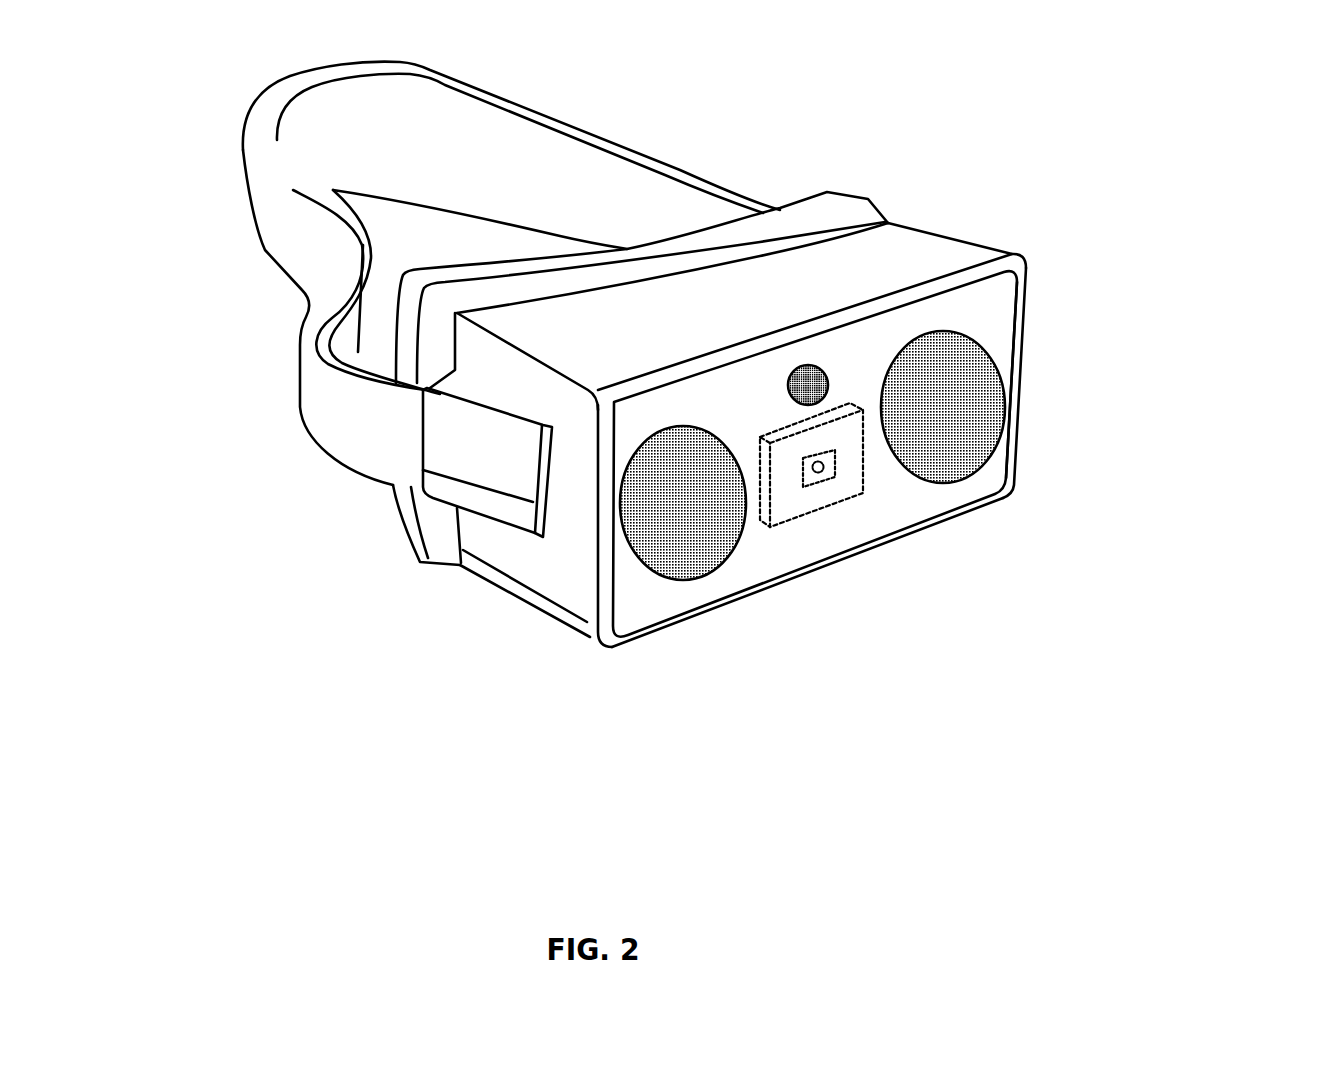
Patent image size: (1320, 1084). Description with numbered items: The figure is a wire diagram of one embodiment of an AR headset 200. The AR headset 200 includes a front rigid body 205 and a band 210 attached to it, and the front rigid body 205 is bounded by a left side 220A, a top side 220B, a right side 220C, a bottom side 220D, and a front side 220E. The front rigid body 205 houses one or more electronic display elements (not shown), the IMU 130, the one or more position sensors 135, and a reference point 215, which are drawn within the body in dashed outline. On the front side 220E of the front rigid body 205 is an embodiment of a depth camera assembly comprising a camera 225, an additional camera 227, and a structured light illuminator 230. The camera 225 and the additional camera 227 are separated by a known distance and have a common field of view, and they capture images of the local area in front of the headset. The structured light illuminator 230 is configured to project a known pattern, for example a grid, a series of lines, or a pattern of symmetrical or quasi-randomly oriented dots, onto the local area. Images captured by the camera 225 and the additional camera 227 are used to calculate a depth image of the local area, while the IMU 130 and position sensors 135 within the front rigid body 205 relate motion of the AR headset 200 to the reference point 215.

The AR headset 200 is at (130, 64).
The front rigid body 205 is at (706, 488).
The band 210 is at (640, 150).
The reference point 215 is at (821, 477).
The left side 220A is at (982, 248).
The top side 220B is at (553, 318).
The right side 220C is at (557, 562).
The bottom side 220D is at (503, 612).
The front side 220E is at (653, 607).
The camera 225 is at (710, 538).
The additional camera 227 is at (975, 412).
The structured light illuminator 230 is at (828, 367).
The IMU 130 is at (867, 480).
The position sensors 135 is at (807, 487).